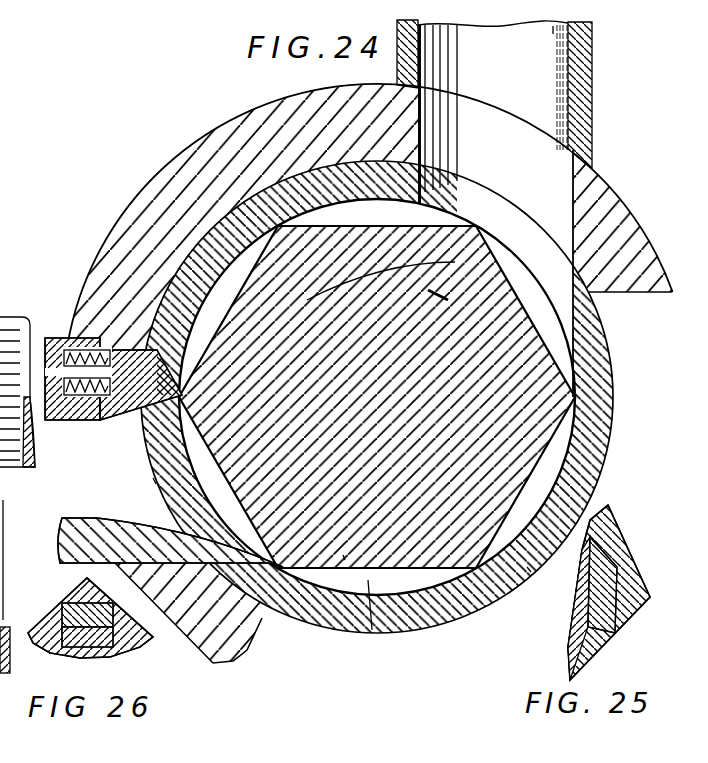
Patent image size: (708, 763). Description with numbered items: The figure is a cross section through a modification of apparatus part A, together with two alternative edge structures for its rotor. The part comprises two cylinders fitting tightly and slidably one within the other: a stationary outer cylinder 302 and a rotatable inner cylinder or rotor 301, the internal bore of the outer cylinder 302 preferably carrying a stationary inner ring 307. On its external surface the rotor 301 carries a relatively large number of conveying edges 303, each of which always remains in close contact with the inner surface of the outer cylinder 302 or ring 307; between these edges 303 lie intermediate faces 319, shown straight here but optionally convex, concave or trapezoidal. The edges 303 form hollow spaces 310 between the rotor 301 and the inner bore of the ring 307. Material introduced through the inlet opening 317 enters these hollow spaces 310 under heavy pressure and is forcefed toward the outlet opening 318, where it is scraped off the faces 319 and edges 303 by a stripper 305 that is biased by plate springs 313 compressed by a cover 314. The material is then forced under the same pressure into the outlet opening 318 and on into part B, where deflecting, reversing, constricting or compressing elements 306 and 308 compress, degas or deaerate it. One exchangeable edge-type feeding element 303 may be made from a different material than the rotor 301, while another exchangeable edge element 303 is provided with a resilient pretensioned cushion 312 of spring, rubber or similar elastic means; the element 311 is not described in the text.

In FIG. 24, the inner cylinder or rotor 301 is at (343, 555).
In FIG. 26, the inner cylinder or rotor 301 is at (43, 625).
In FIG. 25, the inner cylinder or rotor 301 is at (613, 515).
In FIG. 24, the outer cylinder 302 is at (140, 197).
In FIG. 24, the edge 303 is at (470, 235).
In FIG. 26, the edge 303 is at (77, 590).
In FIG. 25, the edge 303 is at (637, 583).
In FIG. 24, the stripper 305 is at (182, 386).
In FIG. 24, the deflecting, reversing and/or constricting or compressing element 306 is at (72, 532).
In FIG. 24, the stationary inner ring 307 is at (527, 567).
In FIG. 24, the deflecting, reversing and/or constricting or compressing element 308 is at (58, 420).
In FIG. 24, the hollow space 310 is at (0, 205).
In FIG. 24, the shaft 311 is at (2, 487).
In FIG. 26, the resilient or elastic pretensioned cushion 312 is at (45, 650).
In FIG. 24, the plate springs 313 is at (105, 340).
In FIG. 24, the cover 314 is at (62, 337).
In FIG. 24, the inlet opening 317 is at (562, 90).
In FIG. 24, the outlet opening 318 is at (153, 478).
In FIG. 24, the faces 319 is at (510, 277).